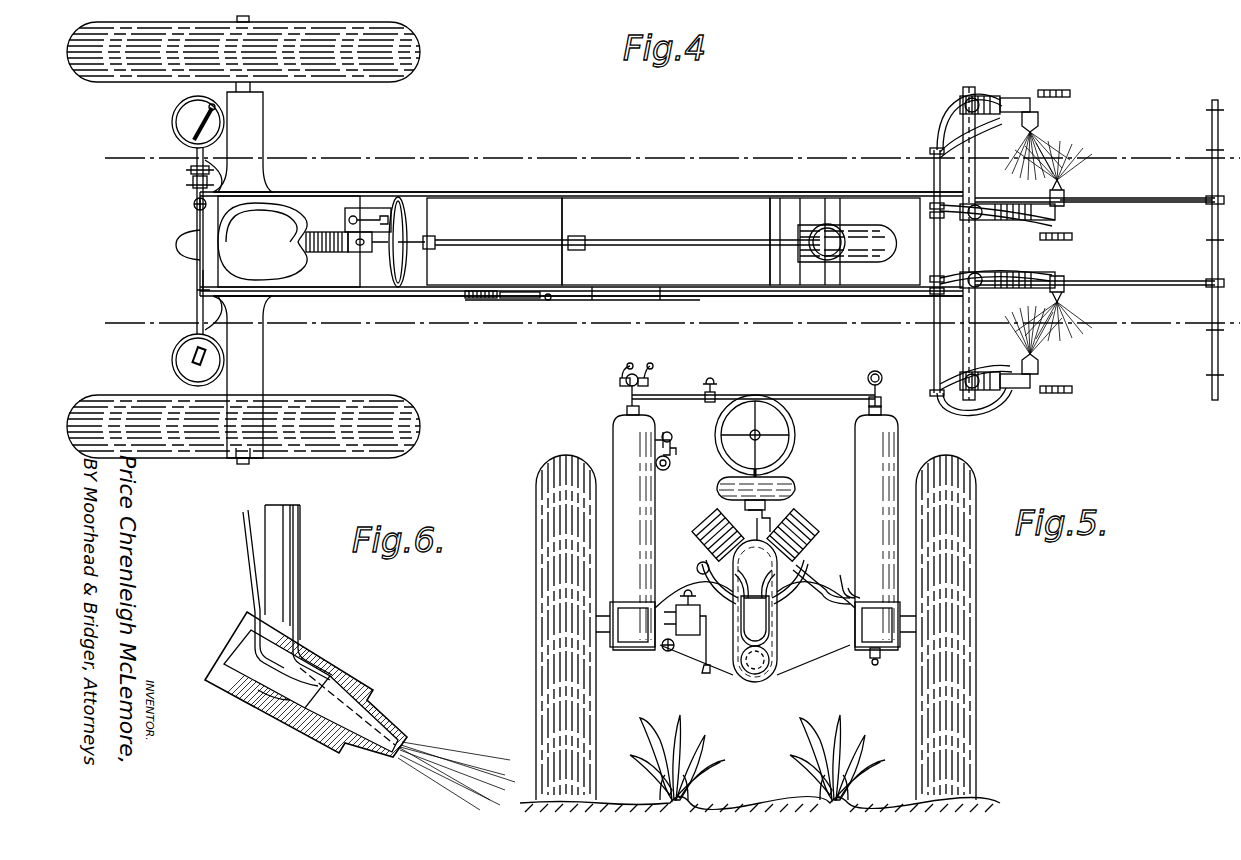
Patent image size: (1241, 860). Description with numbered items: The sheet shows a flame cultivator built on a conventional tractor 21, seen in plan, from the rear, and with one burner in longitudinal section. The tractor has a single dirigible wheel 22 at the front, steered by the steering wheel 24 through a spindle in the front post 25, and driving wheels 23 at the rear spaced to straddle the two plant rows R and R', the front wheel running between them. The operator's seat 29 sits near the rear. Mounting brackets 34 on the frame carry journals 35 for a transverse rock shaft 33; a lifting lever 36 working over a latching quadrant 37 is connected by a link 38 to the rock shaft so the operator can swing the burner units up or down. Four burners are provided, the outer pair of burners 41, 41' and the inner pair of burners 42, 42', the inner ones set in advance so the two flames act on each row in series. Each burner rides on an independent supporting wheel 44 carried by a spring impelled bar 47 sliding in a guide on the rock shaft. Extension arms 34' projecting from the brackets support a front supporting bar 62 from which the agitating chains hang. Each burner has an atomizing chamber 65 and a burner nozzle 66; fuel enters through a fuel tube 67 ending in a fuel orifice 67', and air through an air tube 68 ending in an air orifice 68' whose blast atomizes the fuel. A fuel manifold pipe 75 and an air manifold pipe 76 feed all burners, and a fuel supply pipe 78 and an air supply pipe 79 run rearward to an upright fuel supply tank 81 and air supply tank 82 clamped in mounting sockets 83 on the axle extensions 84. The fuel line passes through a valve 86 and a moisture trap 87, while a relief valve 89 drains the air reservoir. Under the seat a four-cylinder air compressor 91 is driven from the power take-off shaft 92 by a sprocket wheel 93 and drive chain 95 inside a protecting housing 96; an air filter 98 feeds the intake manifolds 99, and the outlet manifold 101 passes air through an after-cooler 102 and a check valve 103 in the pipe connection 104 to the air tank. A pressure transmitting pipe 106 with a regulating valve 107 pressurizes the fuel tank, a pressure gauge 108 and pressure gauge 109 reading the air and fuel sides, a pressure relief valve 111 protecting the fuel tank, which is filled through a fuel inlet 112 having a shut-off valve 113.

In FIG. 4, the tractor 21 is at (620, 176).
In FIG. 4, the dirigible wheel 22 is at (893, 238).
In FIG. 4, the driving wheels 23 is at (420, 50).
In FIG. 5, the driving wheels 23 is at (540, 549).
In FIG. 4, the steering wheel 24 is at (400, 196).
In FIG. 5, the steering wheel 24 is at (757, 400).
In FIG. 4, the front post 25 is at (810, 238).
In FIG. 4, the operator's seat 29 is at (290, 218).
In FIG. 5, the operator's seat 29 is at (716, 491).
In FIG. 4, the rock shaft 33 is at (978, 139).
In FIG. 4, the mounting brackets 34 is at (1025, 241).
In FIG. 4, the extension arms 34' is at (1136, 221).
In FIG. 4, the journals 35 is at (960, 212).
In FIG. 4, the lifting lever 36 is at (528, 300).
In FIG. 4, the latching quadrant 37 is at (478, 300).
In FIG. 4, the link 38 is at (632, 300).
In FIG. 4, the burner 41 is at (1044, 340).
In FIG. 6, the burner 41 is at (366, 685).
In FIG. 4, the burner 41' is at (1051, 137).
In FIG. 4, the burner 42 is at (1063, 299).
In FIG. 4, the burner 42' is at (1066, 173).
In FIG. 4, the supporting wheels 44 is at (1055, 90).
In FIG. 4, the spring impelled bar 47 is at (1012, 96).
In FIG. 4, the front supporting bar 62 is at (1212, 256).
In FIG. 6, the atomizing chamber 65 is at (250, 690).
In FIG. 6, the burner nozzle 66 is at (392, 728).
In FIG. 6, the fuel tube 67 is at (306, 592).
In FIG. 6, the fuel orifice 67' is at (326, 717).
In FIG. 6, the air tube 68 is at (240, 591).
In FIG. 6, the air orifice 68' is at (271, 709).
In FIG. 4, the fuel manifold pipe 75 is at (935, 132).
In FIG. 4, the air manifold pipe 76 is at (934, 179).
In FIG. 4, the fuel supply pipe 78 is at (720, 192).
In FIG. 5, the fuel supply pipe 78 is at (708, 673).
In FIG. 4, the air supply pipe 79 is at (730, 292).
In FIG. 5, the air supply pipe 79 is at (826, 610).
In FIG. 4, the fuel supply tank 81 is at (176, 112).
In FIG. 5, the fuel supply tank 81 is at (618, 437).
In FIG. 4, the air supply tank 82 is at (180, 358).
In FIG. 5, the air supply tank 82 is at (900, 437).
In FIG. 5, the mounting sockets 83 is at (620, 648).
In FIG. 4, the axle extensions 84 is at (265, 128).
In FIG. 4, the valve 86 is at (192, 180).
In FIG. 5, the valve 86 is at (706, 590).
In FIG. 5, the moisture trap 87 is at (668, 650).
In FIG. 5, the relief valve 89 is at (870, 664).
In FIG. 5, the air compressor 91 is at (706, 537).
In FIG. 5, the power take-off shaft 92 is at (755, 680).
In FIG. 5, the sprocket wheel 93 is at (770, 676).
In FIG. 5, the drive chain 95 is at (768, 640).
In FIG. 5, the protecting housing 96 is at (770, 655).
In FIG. 5, the air filter 98 is at (760, 617).
In FIG. 5, the intake manifolds 99 is at (740, 577).
In FIG. 5, the outlet manifold 101 is at (772, 517).
In FIG. 5, the after-cooler 102 is at (708, 560).
In FIG. 5, the check valve 103 is at (808, 566).
In FIG. 5, the pipe connection 104 is at (860, 597).
In FIG. 4, the pressure transmitting pipe 106 is at (203, 290).
In FIG. 5, the pressure transmitting pipe 106 is at (806, 396).
In FIG. 4, the regulating valve 107 is at (194, 206).
In FIG. 5, the regulating valve 107 is at (709, 392).
In FIG. 5, the pressure gauge 108 is at (871, 376).
In FIG. 5, the pressure gauge 109 is at (620, 377).
In FIG. 5, the pressure relief valve 111 is at (644, 386).
In FIG. 5, the fuel inlet 112 is at (668, 436).
In FIG. 5, the shut-off valve 113 is at (670, 456).
In FIG. 4, the plant row R is at (1172, 343).
In FIG. 5, the plant row R is at (837, 757).
In FIG. 4, the plant row R' is at (1172, 140).
In FIG. 5, the plant row R' is at (671, 757).